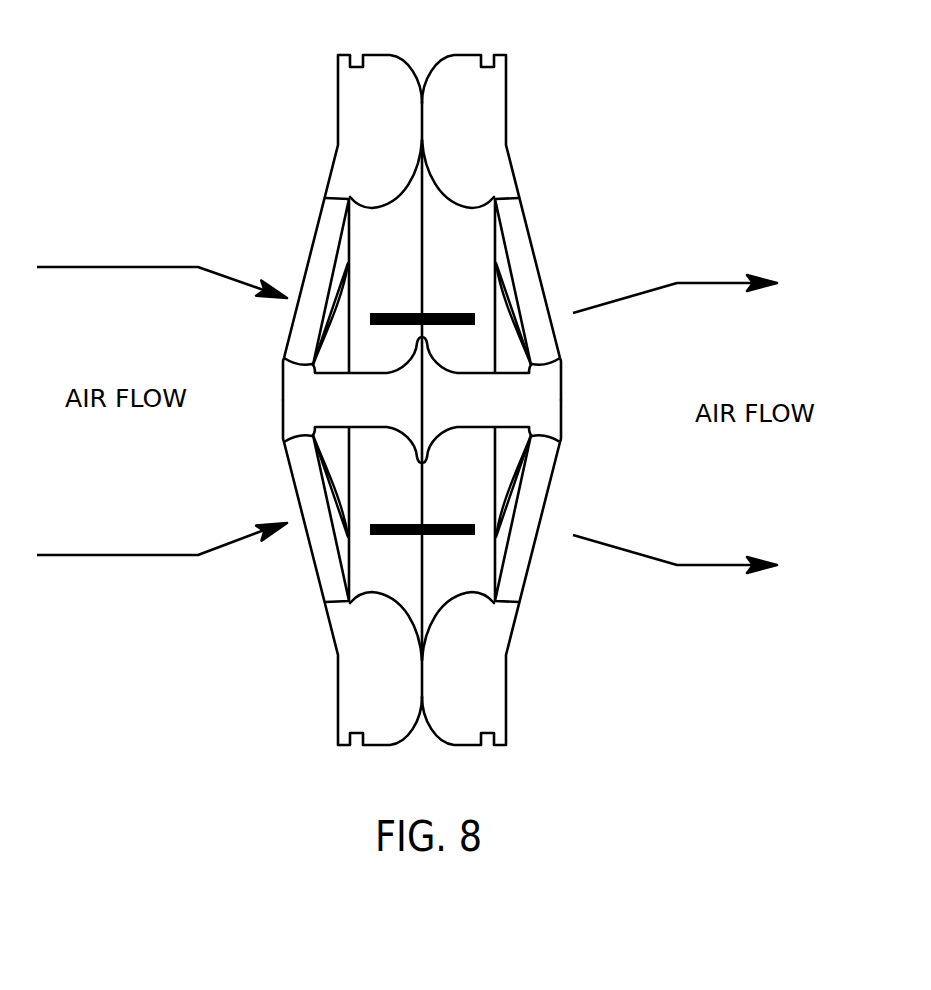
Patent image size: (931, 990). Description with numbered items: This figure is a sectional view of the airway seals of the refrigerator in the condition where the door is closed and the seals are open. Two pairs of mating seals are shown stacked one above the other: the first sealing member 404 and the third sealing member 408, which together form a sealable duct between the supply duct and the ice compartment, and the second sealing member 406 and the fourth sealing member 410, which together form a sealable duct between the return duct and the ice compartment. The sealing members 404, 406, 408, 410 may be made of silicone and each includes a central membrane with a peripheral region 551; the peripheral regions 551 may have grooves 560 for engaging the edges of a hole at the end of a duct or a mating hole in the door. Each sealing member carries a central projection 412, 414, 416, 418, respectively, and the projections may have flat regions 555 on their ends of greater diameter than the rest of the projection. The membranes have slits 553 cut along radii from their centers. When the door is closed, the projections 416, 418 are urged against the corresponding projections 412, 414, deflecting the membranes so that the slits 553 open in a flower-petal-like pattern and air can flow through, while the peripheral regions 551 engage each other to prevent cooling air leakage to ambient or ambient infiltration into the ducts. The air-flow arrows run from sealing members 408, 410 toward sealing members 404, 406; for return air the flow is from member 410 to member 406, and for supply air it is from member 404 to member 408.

The groove 560 is at (346, 43).
The peripheral region 551 is at (402, 687).
The slit 553 is at (332, 303).
The flat region 555 is at (595, 185).
The projection 418 is at (260, 288).
The projection 416 is at (373, 387).
The projection 414 is at (610, 297).
The projection 412 is at (480, 392).
The fourth sealing member 410 is at (231, 541).
The third sealing member 408 is at (327, 562).
The second sealing member 406 is at (571, 564).
The first sealing member 404 is at (518, 572).